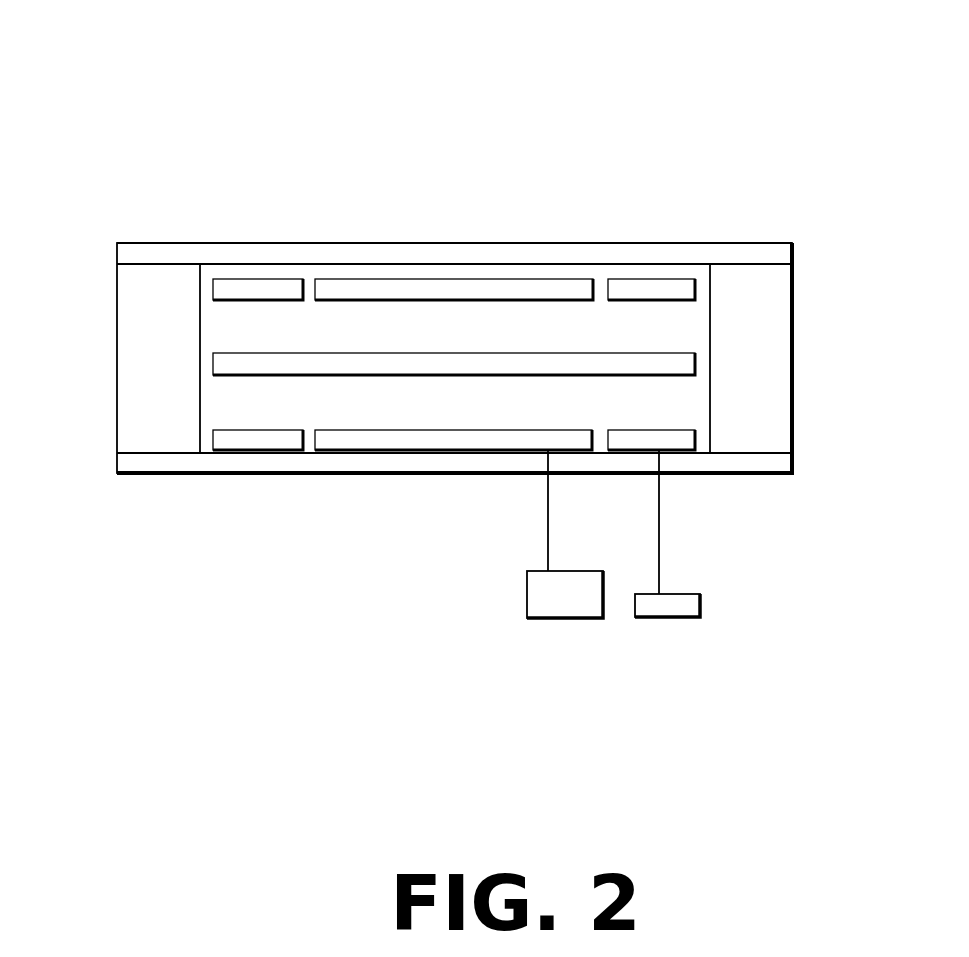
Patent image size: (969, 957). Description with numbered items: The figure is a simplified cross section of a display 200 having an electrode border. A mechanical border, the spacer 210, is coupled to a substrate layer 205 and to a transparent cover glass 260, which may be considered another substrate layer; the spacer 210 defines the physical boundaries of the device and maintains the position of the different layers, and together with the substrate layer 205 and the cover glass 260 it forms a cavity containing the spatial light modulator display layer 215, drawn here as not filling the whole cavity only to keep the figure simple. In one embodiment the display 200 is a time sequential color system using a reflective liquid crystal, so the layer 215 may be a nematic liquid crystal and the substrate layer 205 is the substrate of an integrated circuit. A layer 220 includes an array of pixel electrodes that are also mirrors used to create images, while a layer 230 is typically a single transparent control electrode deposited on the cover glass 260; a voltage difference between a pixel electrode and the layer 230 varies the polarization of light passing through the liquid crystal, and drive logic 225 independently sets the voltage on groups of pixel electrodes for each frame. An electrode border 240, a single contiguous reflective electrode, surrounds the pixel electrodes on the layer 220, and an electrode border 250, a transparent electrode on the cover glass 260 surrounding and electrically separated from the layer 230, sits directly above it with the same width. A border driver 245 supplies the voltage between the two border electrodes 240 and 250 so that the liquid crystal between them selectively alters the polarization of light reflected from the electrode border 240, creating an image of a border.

The display 200 is at (683, 143).
The substrate layer 205 is at (450, 476).
The spacer 210 is at (115, 355).
The spatial light modulator display layer 215 is at (695, 365).
The layer 220 is at (490, 428).
The drive logic 225 is at (527, 595).
The layer 230 is at (495, 305).
The electrode border 240 is at (285, 428).
The border driver 245 is at (670, 618).
The electrode border 250 is at (287, 305).
The transparent cover glass 260 is at (452, 243).